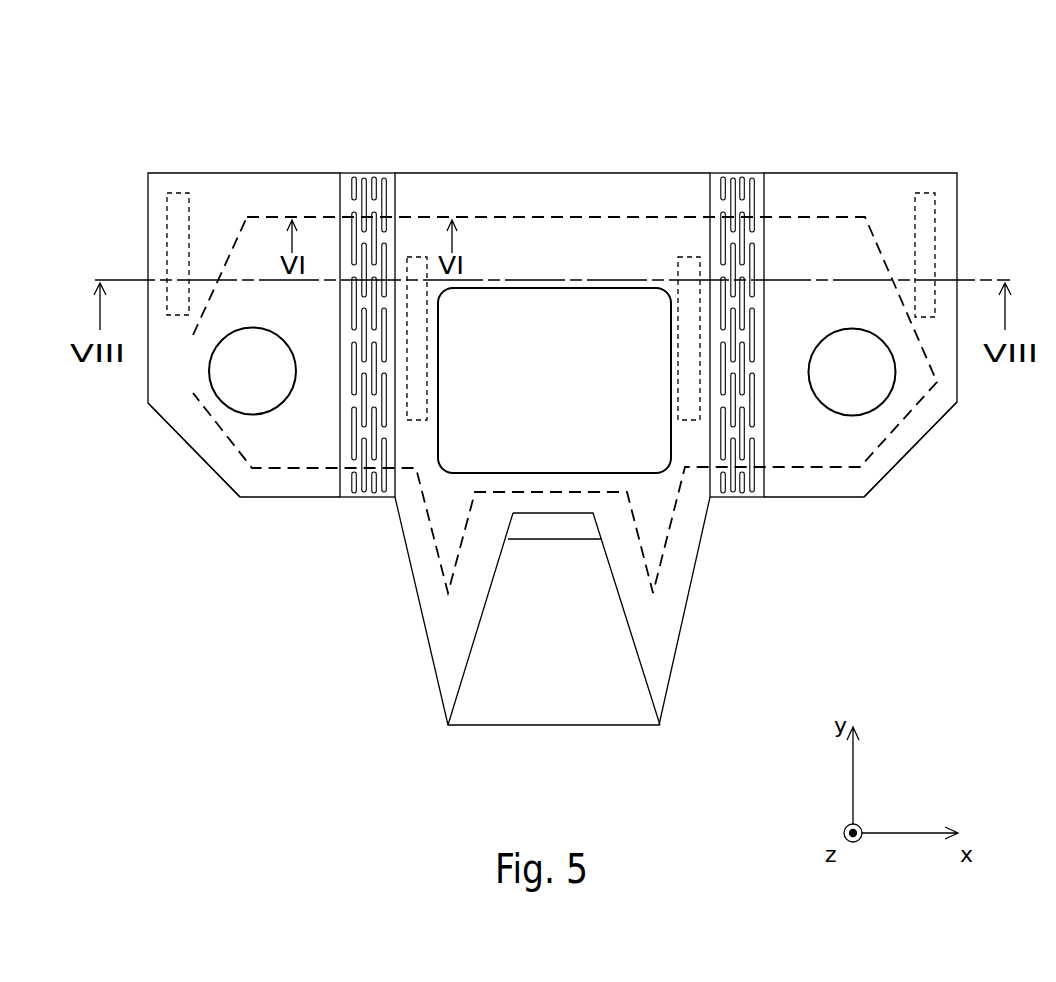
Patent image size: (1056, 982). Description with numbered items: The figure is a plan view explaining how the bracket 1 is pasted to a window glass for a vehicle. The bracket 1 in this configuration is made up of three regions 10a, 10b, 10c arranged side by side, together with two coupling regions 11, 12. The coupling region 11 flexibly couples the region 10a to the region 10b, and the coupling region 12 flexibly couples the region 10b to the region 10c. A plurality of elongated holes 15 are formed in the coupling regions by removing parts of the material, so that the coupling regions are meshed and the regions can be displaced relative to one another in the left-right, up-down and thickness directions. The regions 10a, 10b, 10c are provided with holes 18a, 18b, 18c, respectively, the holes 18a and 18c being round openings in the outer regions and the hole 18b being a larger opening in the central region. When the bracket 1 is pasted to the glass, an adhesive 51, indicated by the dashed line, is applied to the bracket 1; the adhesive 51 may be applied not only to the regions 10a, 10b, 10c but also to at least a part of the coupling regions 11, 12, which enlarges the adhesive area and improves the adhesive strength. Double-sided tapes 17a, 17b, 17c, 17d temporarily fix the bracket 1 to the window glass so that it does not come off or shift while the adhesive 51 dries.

The bracket 1 is at (845, 29).
The region 10a is at (228, 470).
The region 10b is at (440, 642).
The region 10c is at (875, 477).
The coupling region 11 is at (374, 527).
The coupling region 12 is at (744, 527).
The elongated holes 15 is at (353, 185).
The double-sided tape 17a is at (175, 193).
The double-sided tape 17b is at (420, 257).
The double-sided tape 17c is at (690, 257).
The double-sided tape 17d is at (930, 193).
The hole 18a is at (208, 370).
The hole 18b is at (548, 317).
The hole 18c is at (878, 388).
The adhesive 51 is at (290, 470).